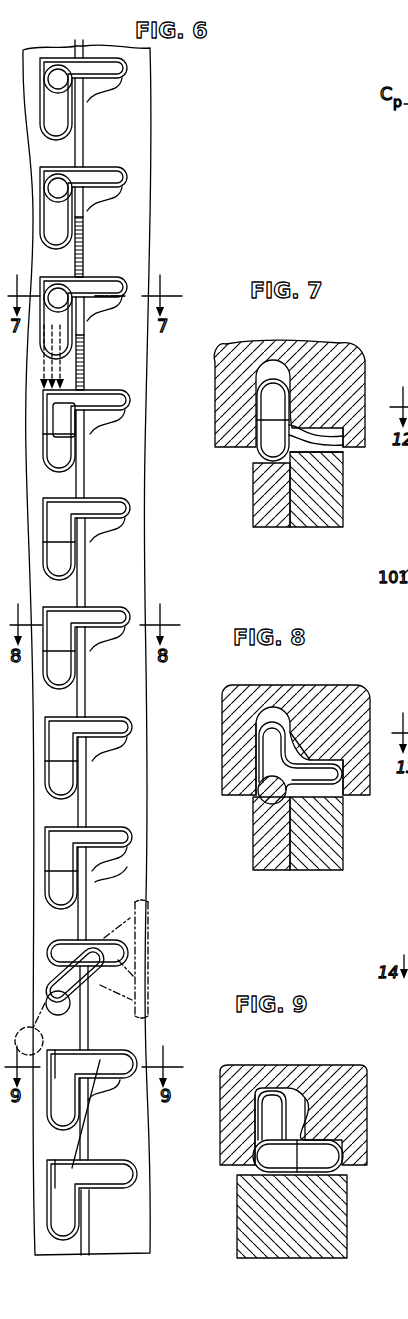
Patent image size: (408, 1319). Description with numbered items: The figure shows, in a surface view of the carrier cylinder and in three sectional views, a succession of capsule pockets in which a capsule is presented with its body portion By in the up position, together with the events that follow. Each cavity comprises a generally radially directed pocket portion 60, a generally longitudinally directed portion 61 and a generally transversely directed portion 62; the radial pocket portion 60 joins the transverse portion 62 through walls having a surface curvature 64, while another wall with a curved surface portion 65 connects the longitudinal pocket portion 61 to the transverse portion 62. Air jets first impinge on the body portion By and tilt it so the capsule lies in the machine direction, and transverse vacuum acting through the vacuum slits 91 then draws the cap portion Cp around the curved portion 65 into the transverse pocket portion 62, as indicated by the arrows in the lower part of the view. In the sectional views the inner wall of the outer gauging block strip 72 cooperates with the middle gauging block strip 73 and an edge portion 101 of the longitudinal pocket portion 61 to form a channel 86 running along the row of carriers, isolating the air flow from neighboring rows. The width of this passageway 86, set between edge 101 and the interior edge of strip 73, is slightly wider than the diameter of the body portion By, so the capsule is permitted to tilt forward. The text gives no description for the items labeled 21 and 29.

In FIG. 6, the carrier strip 21 is at (128, 257).
In FIG. 7, the carrier strip 21 is at (349, 362).
In FIG. 8, the carrier strip 21 is at (343, 710).
In FIG. 9, the carrier strip 21 is at (345, 1080).
In FIG. 6, the slit 29 is at (62, 331).
In FIG. 8, the radially directed pocket portion 60 is at (270, 735).
In FIG. 9, the radially directed pocket portion 60 is at (272, 1108).
In FIG. 6, the longitudinal pocket portion 61 is at (65, 455).
In FIG. 6, the transverse pocket portion 62 is at (108, 413).
In FIG. 7, the transverse pocket portion 62 is at (352, 415).
In FIG. 8, the transverse pocket portion 62 is at (347, 795).
In FIG. 7, the surface curvature 64 is at (304, 422).
In FIG. 8, the surface curvature 64 is at (293, 760).
In FIG. 9, the surface curvature 64 is at (306, 1103).
In FIG. 6, the curved surface portion 65 is at (123, 875).
In FIG. 7, the outer gauging block strip 72 is at (316, 528).
In FIG. 8, the outer gauging block strip 72 is at (321, 870).
In FIG. 7, the middle gauging block strip 73 is at (268, 528).
In FIG. 8, the middle gauging block strip 73 is at (272, 870).
In FIG. 7, the channel 86 is at (292, 466).
In FIG. 8, the channel 86 is at (258, 801).
In FIG. 6, the vacuum slits 91 is at (150, 980).
In FIG. 6, the edge portion 101 is at (46, 410).
In FIG. 7, the edge portion 101 is at (256, 435).
In FIG. 8, the edge portion 101 is at (258, 758).
In FIG. 9, the edge portion 101 is at (253, 1130).
In FIG. 6, the body portion By is at (58, 88).
In FIG. 7, the body portion By is at (271, 461).
In FIG. 9, the body portion By is at (270, 1163).
In FIG. 6, the cap portion Cp is at (67, 531).
In FIG. 7, the cap portion Cp is at (272, 405).
In FIG. 9, the cap portion Cp is at (340, 1164).